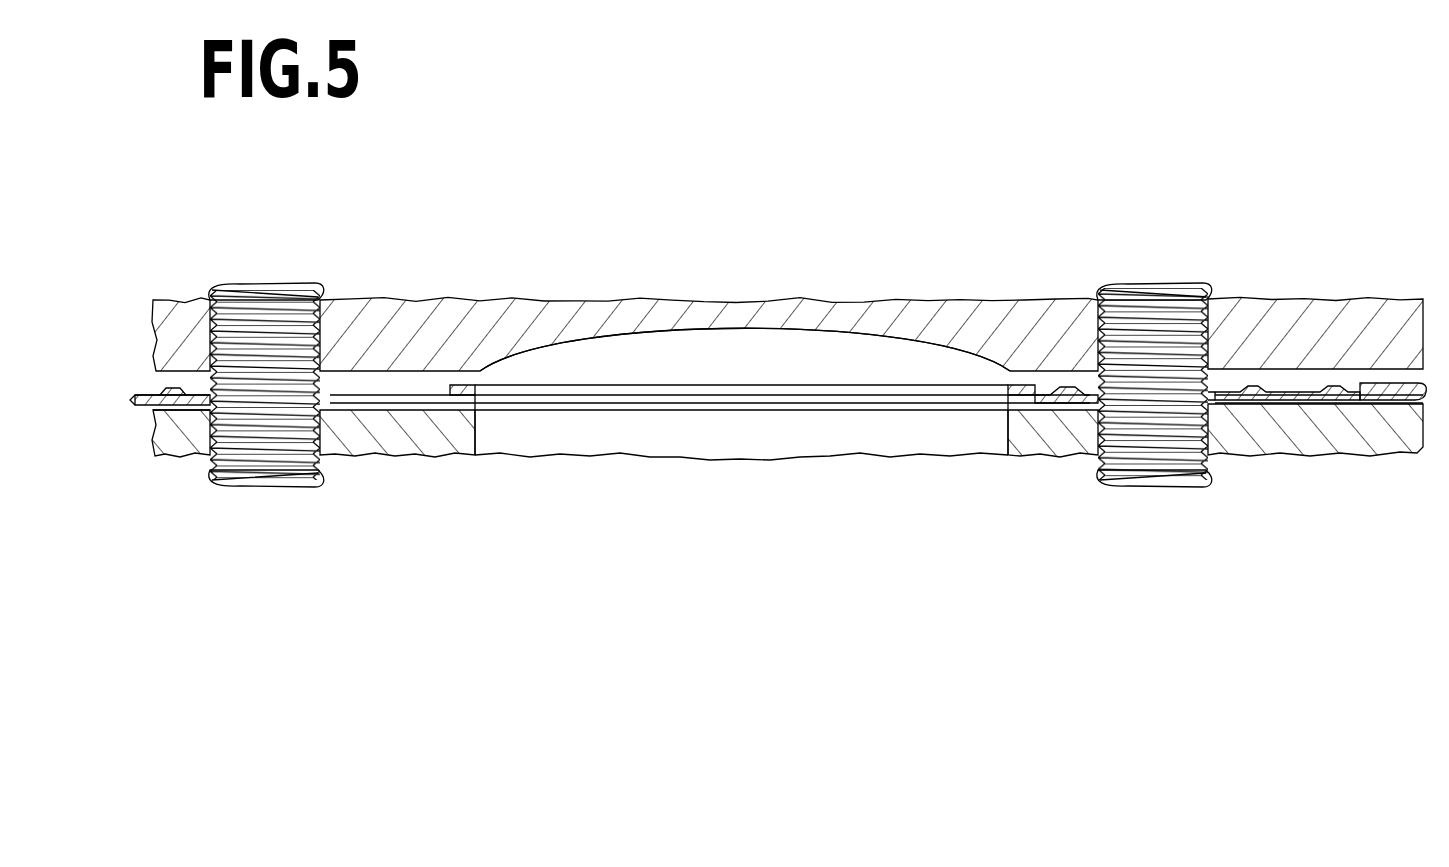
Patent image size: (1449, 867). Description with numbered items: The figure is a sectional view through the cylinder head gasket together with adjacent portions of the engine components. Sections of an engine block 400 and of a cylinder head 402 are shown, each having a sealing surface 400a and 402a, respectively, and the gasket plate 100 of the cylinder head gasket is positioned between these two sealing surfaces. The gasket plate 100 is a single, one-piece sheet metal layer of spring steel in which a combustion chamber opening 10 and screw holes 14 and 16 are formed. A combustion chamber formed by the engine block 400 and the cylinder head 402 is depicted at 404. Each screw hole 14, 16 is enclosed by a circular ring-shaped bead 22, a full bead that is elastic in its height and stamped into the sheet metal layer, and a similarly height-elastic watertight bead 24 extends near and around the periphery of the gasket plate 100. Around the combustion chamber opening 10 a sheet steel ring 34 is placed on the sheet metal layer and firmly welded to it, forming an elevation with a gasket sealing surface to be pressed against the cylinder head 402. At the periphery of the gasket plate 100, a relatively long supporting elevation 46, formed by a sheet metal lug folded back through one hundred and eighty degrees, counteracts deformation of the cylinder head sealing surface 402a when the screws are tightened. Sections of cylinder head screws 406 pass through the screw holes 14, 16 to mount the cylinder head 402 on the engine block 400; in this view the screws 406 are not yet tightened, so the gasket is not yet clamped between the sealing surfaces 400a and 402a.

The combustion chamber opening 10 is at (495, 398).
The screw hole 14 is at (1187, 404).
The screw hole 16 is at (298, 405).
The circular ring-shaped bead 22 is at (352, 386).
The watertight bead 24 is at (1330, 388).
The sheet steel ring 34 is at (1022, 385).
The supporting elevation 46 is at (1397, 386).
The gasket plate 100 is at (1080, 404).
The engine block 400 is at (1279, 432).
The sealing surface 400a is at (158, 402).
The cylinder head 402 is at (1364, 322).
The sealing surface 402a is at (418, 384).
The combustion chamber 404 is at (670, 432).
The cylinder head screw 406 is at (264, 300).